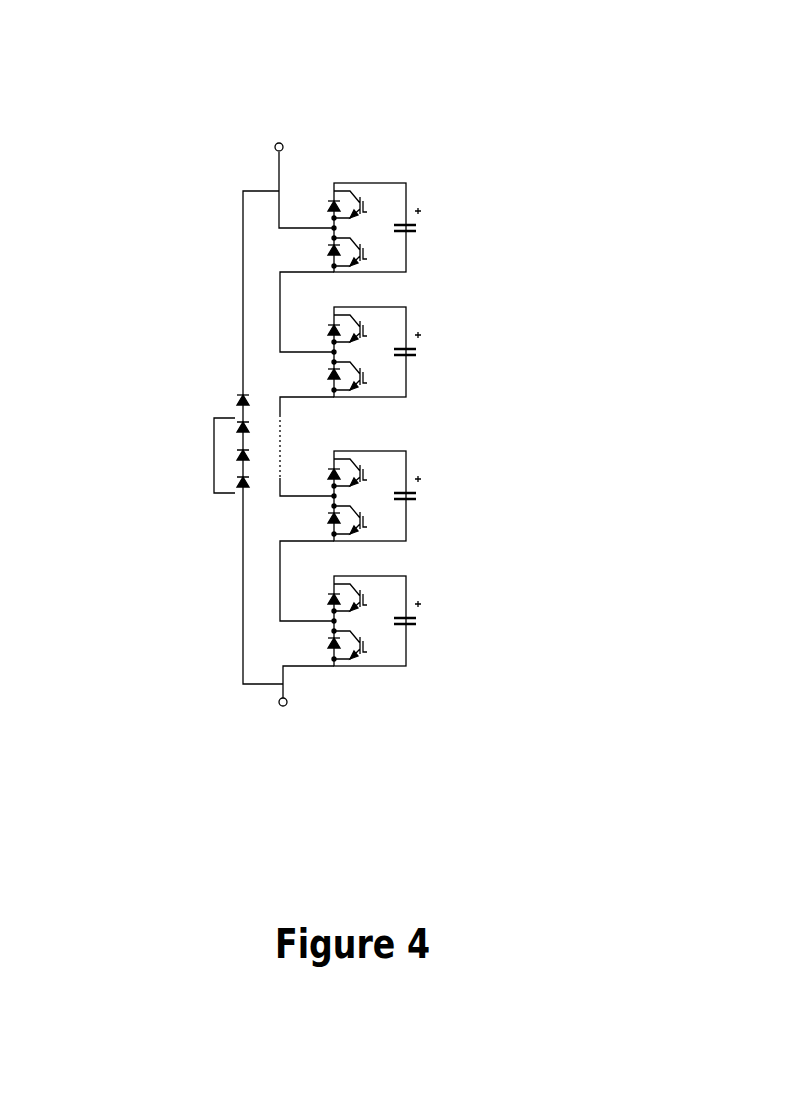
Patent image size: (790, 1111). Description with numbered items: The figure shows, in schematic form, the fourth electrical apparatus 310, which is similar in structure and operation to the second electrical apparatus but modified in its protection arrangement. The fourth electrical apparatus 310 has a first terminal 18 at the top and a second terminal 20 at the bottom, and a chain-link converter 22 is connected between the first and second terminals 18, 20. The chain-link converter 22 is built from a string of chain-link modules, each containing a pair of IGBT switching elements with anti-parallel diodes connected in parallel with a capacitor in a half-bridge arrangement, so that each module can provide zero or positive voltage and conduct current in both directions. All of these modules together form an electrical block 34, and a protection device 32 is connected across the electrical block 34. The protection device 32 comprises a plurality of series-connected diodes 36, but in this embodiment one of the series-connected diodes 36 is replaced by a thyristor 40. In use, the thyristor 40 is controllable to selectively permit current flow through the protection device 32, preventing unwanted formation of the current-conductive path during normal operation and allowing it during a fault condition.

The fourth electrical apparatus 310 is at (341, 96).
The first terminal 18 is at (275, 146).
The second terminal 20 is at (278, 704).
The chain-link converter 22 is at (373, 735).
The protection device 32 is at (162, 299).
The electrical block 34 is at (468, 402).
The series-connected diodes 36 is at (214, 472).
The thyristor 40 is at (240, 397).